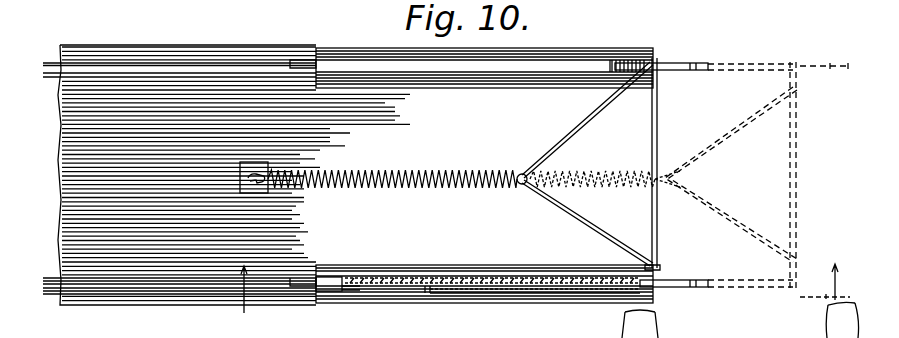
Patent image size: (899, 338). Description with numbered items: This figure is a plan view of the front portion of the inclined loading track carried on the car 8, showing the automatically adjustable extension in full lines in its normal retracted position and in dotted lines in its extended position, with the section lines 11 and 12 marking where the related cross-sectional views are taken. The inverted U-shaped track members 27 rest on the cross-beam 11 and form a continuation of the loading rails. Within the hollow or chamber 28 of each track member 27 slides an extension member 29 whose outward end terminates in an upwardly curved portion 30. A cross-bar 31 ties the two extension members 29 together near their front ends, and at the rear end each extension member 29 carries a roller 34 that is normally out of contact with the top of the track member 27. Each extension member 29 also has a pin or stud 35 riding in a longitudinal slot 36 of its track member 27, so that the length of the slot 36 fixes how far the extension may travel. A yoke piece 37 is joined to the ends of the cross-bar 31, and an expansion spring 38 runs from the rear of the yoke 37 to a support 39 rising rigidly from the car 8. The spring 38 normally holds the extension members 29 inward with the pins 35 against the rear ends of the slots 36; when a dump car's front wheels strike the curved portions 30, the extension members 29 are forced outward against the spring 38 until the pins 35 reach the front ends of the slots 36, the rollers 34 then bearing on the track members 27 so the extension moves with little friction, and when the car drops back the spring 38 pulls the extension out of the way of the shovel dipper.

The car 8 is at (234, 175).
The cross-beam 11 is at (538, 301).
The section line 12— 12 is at (643, 5).
The track member 27 is at (353, 63).
The hollow or chamber 28 is at (468, 288).
The extension member 29 is at (500, 293).
The upwardly curved portion 30 is at (690, 63).
The cross-bar 31 is at (657, 136).
The roller 34 is at (345, 296).
The pin or stud 35 is at (428, 292).
The longitudinal slot 36 is at (538, 296).
The yoke piece 37 is at (586, 133).
The expansion spring 38 is at (457, 170).
The support 39 is at (255, 193).